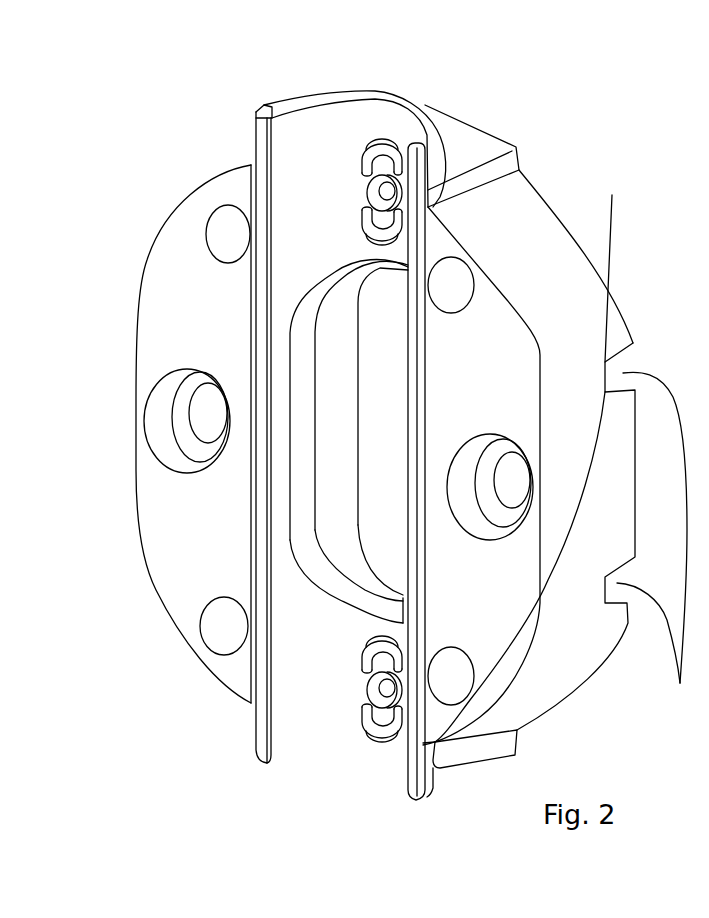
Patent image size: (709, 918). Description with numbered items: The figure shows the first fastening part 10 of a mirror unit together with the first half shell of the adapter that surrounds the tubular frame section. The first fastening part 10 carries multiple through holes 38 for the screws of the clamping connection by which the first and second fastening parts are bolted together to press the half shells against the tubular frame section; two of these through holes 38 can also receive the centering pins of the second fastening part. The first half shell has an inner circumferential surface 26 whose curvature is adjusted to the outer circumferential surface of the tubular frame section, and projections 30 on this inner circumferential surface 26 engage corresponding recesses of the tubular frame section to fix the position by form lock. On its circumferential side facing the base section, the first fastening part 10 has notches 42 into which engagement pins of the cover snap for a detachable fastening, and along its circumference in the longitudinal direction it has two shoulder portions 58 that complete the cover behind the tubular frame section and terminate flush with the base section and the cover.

The first fastening part 10 is at (188, 169).
The inner circumferential surface 26 is at (322, 675).
The projections 30 is at (357, 215).
The through holes 38 is at (508, 482).
The notches 42 is at (555, 483).
The shoulder portions 58 is at (477, 140).